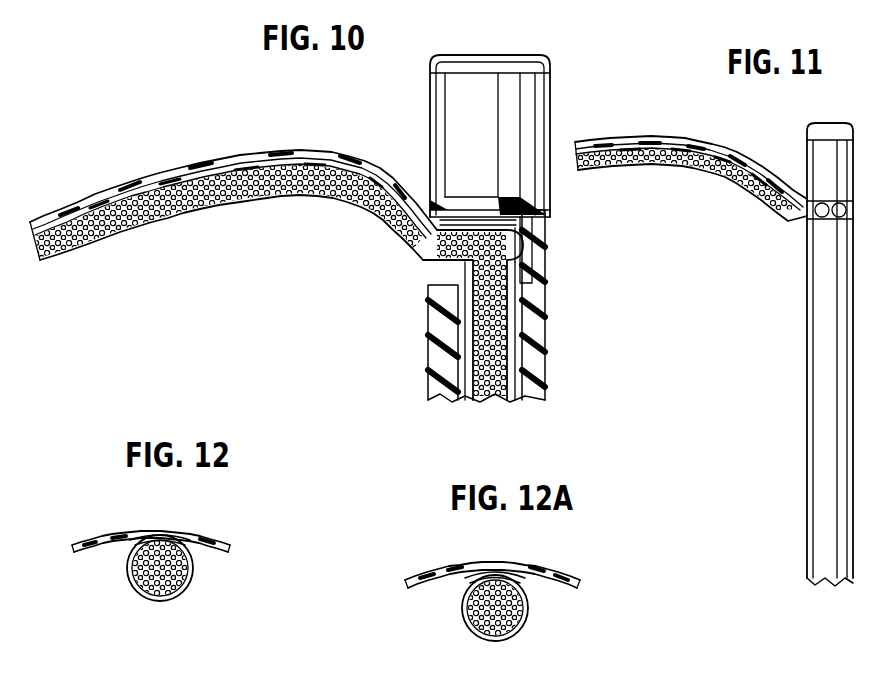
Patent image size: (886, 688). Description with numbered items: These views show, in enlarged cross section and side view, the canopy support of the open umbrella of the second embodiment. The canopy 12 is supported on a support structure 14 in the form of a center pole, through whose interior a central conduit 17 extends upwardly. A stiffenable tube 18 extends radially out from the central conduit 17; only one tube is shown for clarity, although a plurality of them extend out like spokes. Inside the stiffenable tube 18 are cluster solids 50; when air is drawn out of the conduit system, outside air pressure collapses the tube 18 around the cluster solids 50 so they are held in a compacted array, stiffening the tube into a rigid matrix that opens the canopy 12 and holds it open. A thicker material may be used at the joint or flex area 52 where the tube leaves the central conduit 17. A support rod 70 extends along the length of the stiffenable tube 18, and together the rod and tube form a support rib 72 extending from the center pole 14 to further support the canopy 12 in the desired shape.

In FIG. 10, the canopy 12 is at (380, 157).
In FIG. 11, the canopy 12 is at (770, 157).
In FIG. 12, the canopy 12 is at (108, 533).
In FIG. 12A, the canopy 12 is at (427, 570).
In FIG. 11, the support structure 14 is at (818, 372).
In FIG. 10, the central conduit 17 is at (428, 352).
In FIG. 10, the stiffenable tube 18 is at (120, 230).
In FIG. 11, the stiffenable tube 18 is at (695, 168).
In FIG. 12, the stiffenable tube 18 is at (193, 563).
In FIG. 12A, the stiffenable tube 18 is at (527, 593).
In FIG. 10, the cluster solids 50 is at (386, 222).
In FIG. 12, the cluster solids 50 is at (133, 582).
In FIG. 12A, the cluster solids 50 is at (460, 607).
In FIG. 10, the joint or flex area 52 is at (432, 258).
In FIG. 10, the support rod 70 is at (112, 185).
In FIG. 11, the support rod 70 is at (668, 142).
In FIG. 12, the support rod 70 is at (177, 537).
In FIG. 12A, the support rod 70 is at (510, 560).
In FIG. 10, the support rib 72 is at (165, 176).
In FIG. 11, the support rib 72 is at (722, 152).
In FIG. 12, the support rib 72 is at (163, 537).
In FIG. 12A, the support rib 72 is at (487, 572).